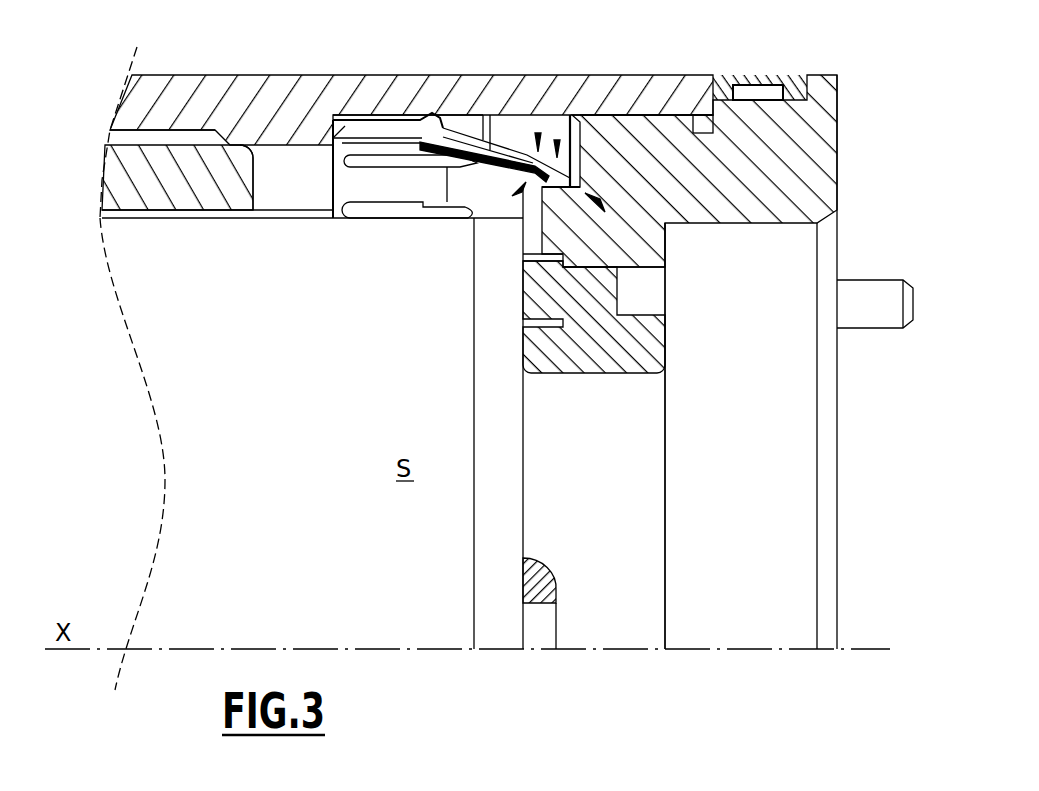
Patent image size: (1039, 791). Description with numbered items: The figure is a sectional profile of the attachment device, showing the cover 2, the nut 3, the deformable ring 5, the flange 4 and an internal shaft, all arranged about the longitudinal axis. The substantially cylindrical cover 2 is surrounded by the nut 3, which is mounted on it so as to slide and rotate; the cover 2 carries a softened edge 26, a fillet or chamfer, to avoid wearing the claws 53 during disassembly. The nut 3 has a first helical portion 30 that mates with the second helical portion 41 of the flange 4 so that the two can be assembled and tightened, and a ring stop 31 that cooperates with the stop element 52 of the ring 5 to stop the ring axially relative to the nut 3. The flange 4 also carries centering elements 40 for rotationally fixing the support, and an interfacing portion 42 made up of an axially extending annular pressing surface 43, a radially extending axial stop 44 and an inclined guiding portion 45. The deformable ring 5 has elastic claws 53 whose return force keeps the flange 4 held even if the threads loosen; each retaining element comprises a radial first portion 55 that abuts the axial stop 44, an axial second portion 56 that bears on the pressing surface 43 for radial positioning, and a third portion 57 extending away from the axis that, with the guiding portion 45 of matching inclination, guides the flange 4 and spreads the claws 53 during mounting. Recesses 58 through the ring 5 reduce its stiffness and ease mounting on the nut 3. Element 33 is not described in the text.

The cover 2 is at (137, 182).
The nut 3 is at (203, 107).
The flange 4 is at (773, 167).
The deformable ring 5 is at (378, 197).
The softened edge 26 is at (247, 160).
The first helical portion 30 is at (697, 117).
The ring stop 31 is at (370, 117).
The step of cover ring 33 is at (285, 137).
The centering elements 40 is at (525, 323).
The second helical portion 41 is at (648, 127).
The interfacing portion 42 is at (665, 300).
The annular pressing surface 43 is at (665, 262).
The axial stop 44 is at (507, 200).
The guiding portion 45 is at (503, 130).
The stop element 52 is at (427, 123).
The claws 53 is at (470, 125).
The first portion 55 is at (500, 132).
The second portion 56 is at (548, 266).
The third portion 57 is at (540, 185).
The recesses 58 is at (413, 160).